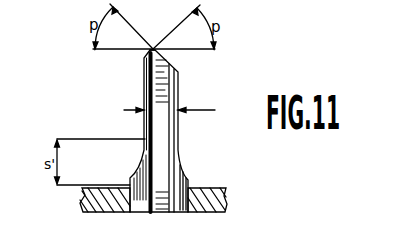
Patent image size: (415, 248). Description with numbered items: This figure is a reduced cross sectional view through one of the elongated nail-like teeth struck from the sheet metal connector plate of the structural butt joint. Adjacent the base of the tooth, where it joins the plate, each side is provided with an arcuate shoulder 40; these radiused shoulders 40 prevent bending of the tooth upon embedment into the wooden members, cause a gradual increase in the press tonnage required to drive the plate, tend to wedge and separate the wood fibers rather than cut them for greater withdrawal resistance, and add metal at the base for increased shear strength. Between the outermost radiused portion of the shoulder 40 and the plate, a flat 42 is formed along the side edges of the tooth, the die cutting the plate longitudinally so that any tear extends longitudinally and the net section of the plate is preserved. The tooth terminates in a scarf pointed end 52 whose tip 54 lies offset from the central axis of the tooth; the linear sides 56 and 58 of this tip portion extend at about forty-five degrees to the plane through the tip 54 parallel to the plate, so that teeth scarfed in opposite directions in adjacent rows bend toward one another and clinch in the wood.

The arcuate shoulder 40 is at (141, 171).
The flat 42 is at (188, 184).
The scarf pointed end 52 is at (161, 48).
The tip 54 is at (146, 58).
The side 56 is at (179, 68).
The side 58 is at (147, 73).